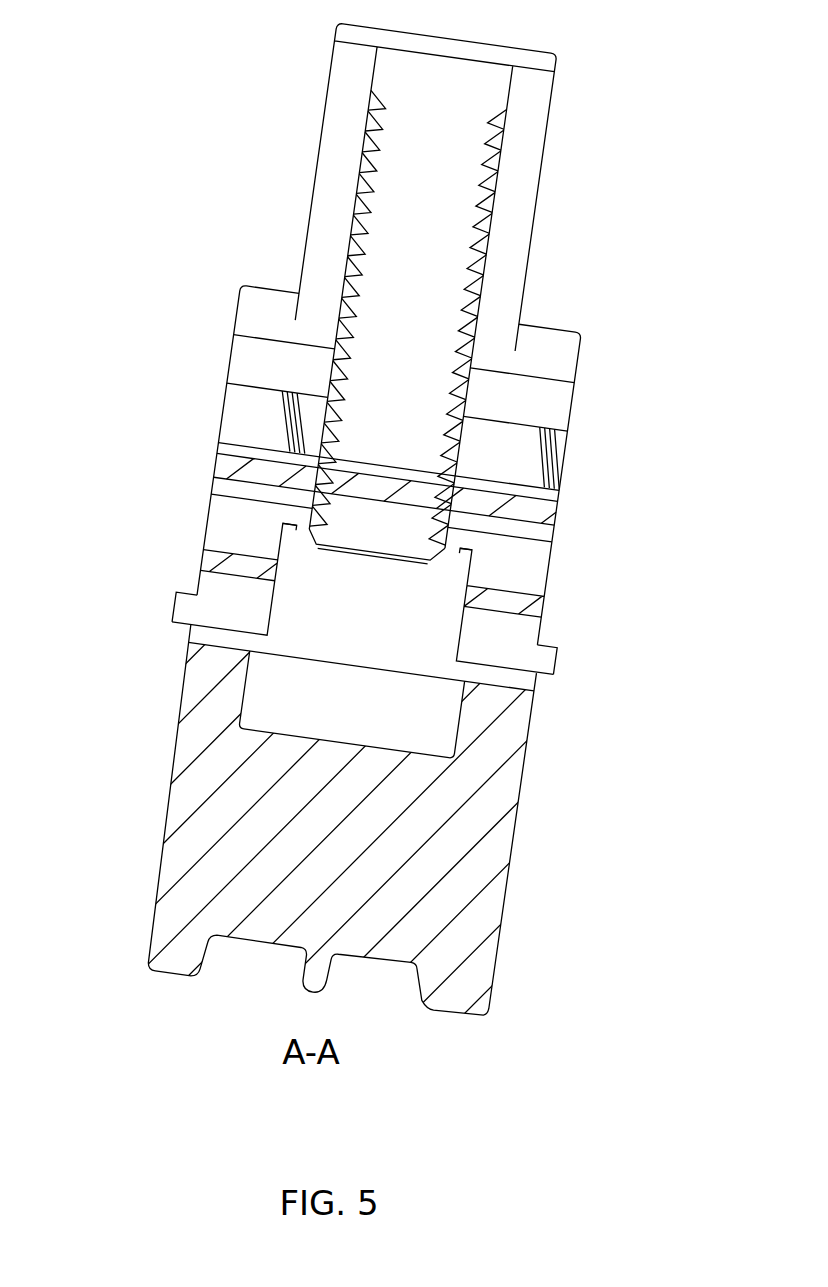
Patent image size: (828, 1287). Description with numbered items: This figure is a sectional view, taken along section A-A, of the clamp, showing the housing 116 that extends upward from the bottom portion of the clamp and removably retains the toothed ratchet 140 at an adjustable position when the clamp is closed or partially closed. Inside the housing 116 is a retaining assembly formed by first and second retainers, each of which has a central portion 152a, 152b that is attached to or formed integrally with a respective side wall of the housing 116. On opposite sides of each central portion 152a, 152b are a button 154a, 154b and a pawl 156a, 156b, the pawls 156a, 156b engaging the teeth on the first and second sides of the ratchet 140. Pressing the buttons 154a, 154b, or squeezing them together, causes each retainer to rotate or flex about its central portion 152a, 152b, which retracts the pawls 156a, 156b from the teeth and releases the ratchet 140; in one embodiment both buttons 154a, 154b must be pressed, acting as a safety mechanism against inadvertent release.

The ratchet 140 is at (382, 207).
The central portion 152a is at (537, 611).
The central portion 152b is at (206, 554).
The button 154a is at (550, 660).
The button 154b is at (194, 608).
The pawl 156a is at (461, 543).
The pawl 156b is at (293, 523).
The housing 116 is at (188, 740).